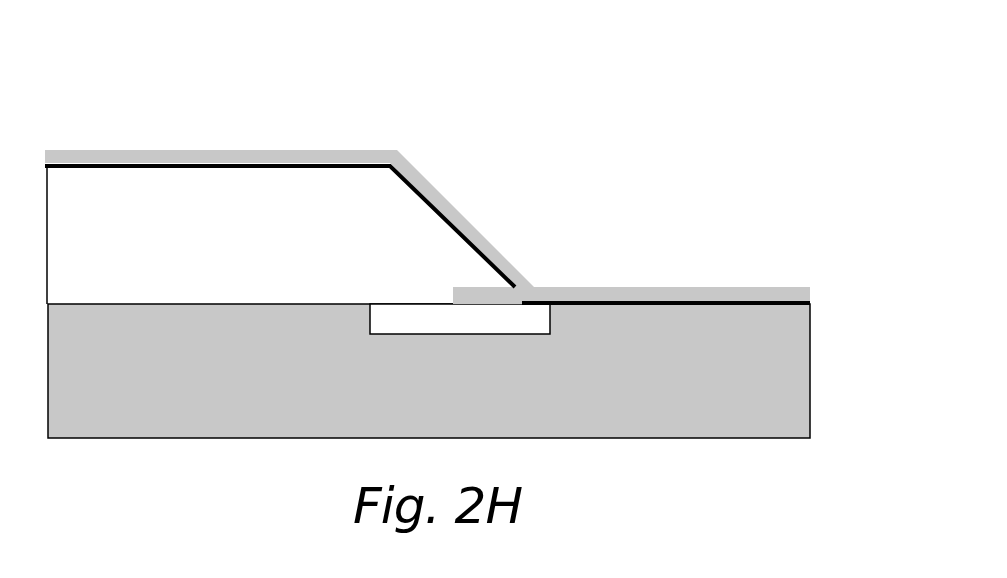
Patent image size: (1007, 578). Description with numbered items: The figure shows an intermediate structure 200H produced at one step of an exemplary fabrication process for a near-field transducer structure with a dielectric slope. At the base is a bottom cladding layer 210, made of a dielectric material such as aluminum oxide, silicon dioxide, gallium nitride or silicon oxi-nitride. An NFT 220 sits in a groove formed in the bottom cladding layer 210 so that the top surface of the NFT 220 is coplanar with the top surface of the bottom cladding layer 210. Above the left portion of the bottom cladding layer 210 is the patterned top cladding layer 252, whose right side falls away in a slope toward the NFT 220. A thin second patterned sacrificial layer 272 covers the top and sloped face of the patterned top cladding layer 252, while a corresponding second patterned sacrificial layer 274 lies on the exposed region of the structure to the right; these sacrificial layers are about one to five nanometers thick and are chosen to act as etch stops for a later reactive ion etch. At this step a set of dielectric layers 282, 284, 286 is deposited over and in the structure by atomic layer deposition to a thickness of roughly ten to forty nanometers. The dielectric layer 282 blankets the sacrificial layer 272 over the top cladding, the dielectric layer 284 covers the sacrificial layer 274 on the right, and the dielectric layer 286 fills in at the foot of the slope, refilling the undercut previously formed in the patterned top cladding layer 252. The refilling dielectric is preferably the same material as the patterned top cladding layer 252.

The intermediate structure 200H is at (206, 78).
The bottom cladding layer 210 is at (429, 371).
The NFT 220 is at (460, 319).
The patterned top cladding layer 252 is at (226, 235).
The second patterned sacrificial layer 272 is at (280, 226).
The second patterned sacrificial layer 274 is at (666, 342).
The dielectric layer 282 is at (290, 203).
The dielectric layer 284 is at (699, 275).
The dielectric layer 286 is at (660, 235).